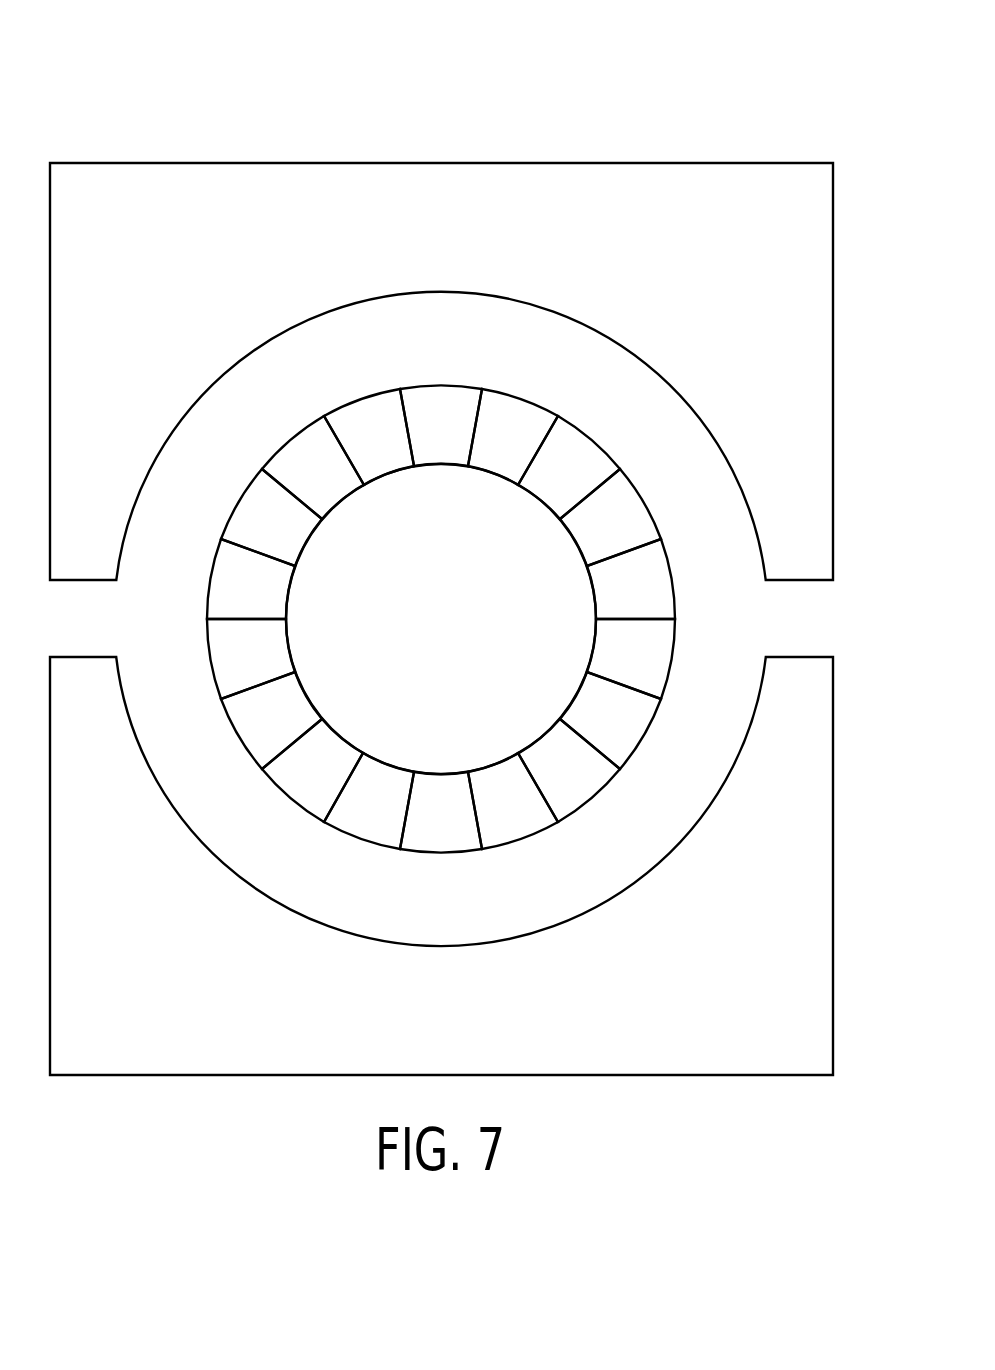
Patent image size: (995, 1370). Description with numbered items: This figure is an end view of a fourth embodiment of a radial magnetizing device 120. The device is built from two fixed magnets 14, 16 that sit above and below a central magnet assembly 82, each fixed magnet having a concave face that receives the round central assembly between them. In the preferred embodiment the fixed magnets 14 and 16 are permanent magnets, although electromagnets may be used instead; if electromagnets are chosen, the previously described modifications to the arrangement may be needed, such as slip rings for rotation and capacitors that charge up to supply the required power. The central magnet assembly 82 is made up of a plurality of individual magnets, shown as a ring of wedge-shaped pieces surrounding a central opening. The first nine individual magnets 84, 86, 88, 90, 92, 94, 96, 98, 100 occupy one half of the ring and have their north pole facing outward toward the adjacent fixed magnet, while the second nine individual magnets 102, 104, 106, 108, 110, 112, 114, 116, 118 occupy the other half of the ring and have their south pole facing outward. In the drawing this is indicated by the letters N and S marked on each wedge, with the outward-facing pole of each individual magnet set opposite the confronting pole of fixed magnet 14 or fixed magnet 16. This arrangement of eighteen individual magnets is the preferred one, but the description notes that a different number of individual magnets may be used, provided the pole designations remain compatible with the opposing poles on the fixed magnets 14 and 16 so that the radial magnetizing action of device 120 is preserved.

The radial magnetizing device 120 is at (499, 96).
The fixed magnet 14 is at (833, 376).
The fixed magnet 16 is at (833, 790).
The central magnet assembly 82 is at (458, 626).
The individual magnet 84 is at (210, 578).
The individual magnet 86 is at (237, 502).
The individual magnet 88 is at (290, 439).
The individual magnet 90 is at (361, 398).
The individual magnet 92 is at (441, 384).
The individual magnet 94 is at (521, 398).
The individual magnet 96 is at (592, 439).
The individual magnet 98 is at (645, 502).
The individual magnet 100 is at (672, 578).
The individual magnet 102 is at (672, 660).
The individual magnet 104 is at (645, 737).
The individual magnet 106 is at (592, 799).
The individual magnet 108 is at (521, 840).
The individual magnet 110 is at (441, 854).
The individual magnet 112 is at (361, 840).
The individual magnet 114 is at (290, 799).
The individual magnet 116 is at (237, 736).
The individual magnet 118 is at (210, 660).